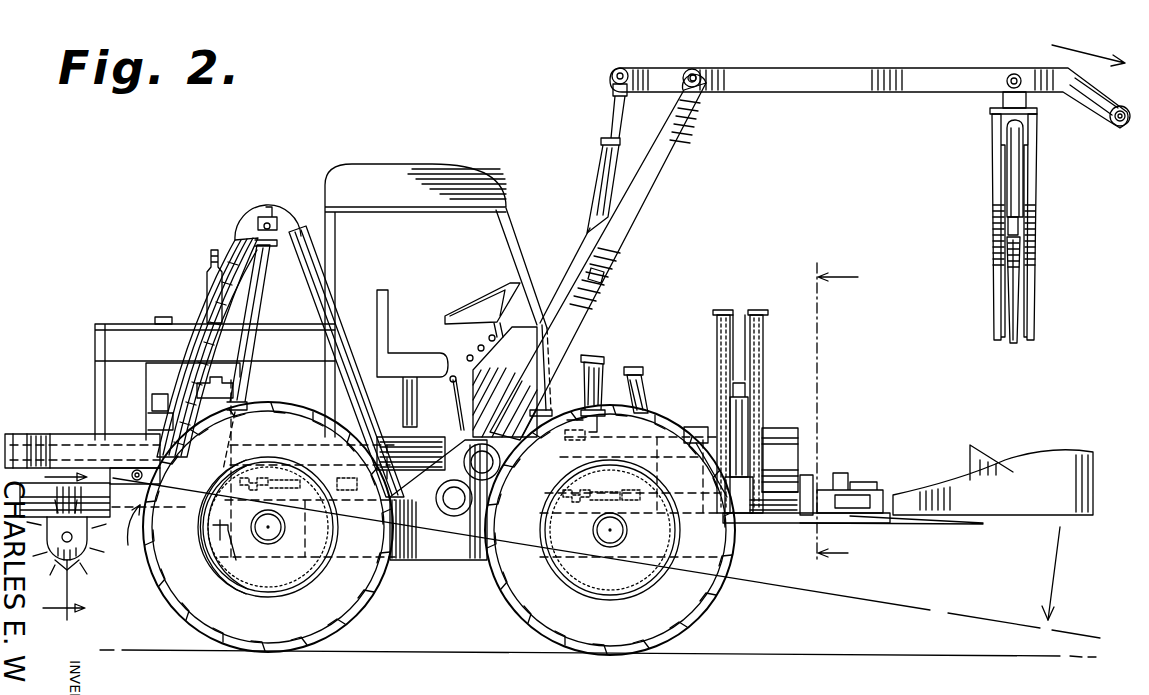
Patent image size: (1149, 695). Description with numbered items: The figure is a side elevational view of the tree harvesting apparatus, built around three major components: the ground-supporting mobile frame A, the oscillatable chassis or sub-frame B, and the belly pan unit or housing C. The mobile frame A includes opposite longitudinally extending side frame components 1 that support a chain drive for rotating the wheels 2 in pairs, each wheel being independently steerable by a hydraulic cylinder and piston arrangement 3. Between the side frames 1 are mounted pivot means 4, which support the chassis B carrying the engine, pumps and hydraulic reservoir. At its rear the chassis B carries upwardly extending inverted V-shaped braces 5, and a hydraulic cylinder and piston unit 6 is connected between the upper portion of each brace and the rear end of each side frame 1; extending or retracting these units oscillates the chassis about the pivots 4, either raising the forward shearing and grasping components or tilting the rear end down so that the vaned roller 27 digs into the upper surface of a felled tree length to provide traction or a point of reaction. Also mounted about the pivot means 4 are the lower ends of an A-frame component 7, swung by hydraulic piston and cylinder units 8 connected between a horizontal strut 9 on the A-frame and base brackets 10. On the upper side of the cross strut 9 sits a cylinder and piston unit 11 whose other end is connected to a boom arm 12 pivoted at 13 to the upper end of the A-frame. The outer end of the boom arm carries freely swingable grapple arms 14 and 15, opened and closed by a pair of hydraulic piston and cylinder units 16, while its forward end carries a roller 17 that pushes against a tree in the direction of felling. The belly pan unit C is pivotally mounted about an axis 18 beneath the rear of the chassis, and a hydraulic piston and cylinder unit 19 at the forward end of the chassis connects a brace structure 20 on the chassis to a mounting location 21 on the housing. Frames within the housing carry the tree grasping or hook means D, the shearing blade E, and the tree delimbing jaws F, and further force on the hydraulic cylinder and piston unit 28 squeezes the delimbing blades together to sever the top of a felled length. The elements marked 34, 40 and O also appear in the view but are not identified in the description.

The side frame components 1 is at (442, 443).
The wheels 2 is at (187, 588).
The hydraulic cylinder and piston arrangements 3 is at (439, 528).
The pivot means 4 is at (497, 497).
The inverted V-shaped braces 5 is at (238, 258).
The hydraulic cylinder and piston unit 6 is at (248, 340).
The A-frame component 7 is at (640, 184).
The hydraulic piston and cylinder units 8 is at (602, 377).
The horizontal strut 9 is at (605, 276).
The base brackets 10 is at (573, 425).
The cylinder and piston unit 11 is at (600, 175).
The boom arm 12 is at (813, 68).
The pivot 13 is at (694, 70).
The grapple arm 14 is at (1013, 345).
The grapple arm 15 is at (994, 337).
The hydraulic piston and cylinder units 16 is at (1012, 173).
The roller 17 is at (1119, 128).
The axis 18 is at (143, 452).
The hydraulic piston and cylinder unit 19 is at (647, 397).
The brace structure 20 is at (632, 366).
The mounting location 21 is at (670, 430).
The roller 27 is at (85, 582).
The hydraulic cylinder and piston unit 28 is at (737, 417).
The carriage block 34 is at (783, 458).
The mast 40 is at (742, 335).
The mobile frame A is at (428, 563).
The chassis B is at (123, 452).
The belly pan unit C is at (129, 535).
The hook means D is at (1056, 474).
The shearing blade E is at (943, 530).
The tree delimbing jaws F is at (780, 428).
The steering wheel O is at (490, 288).